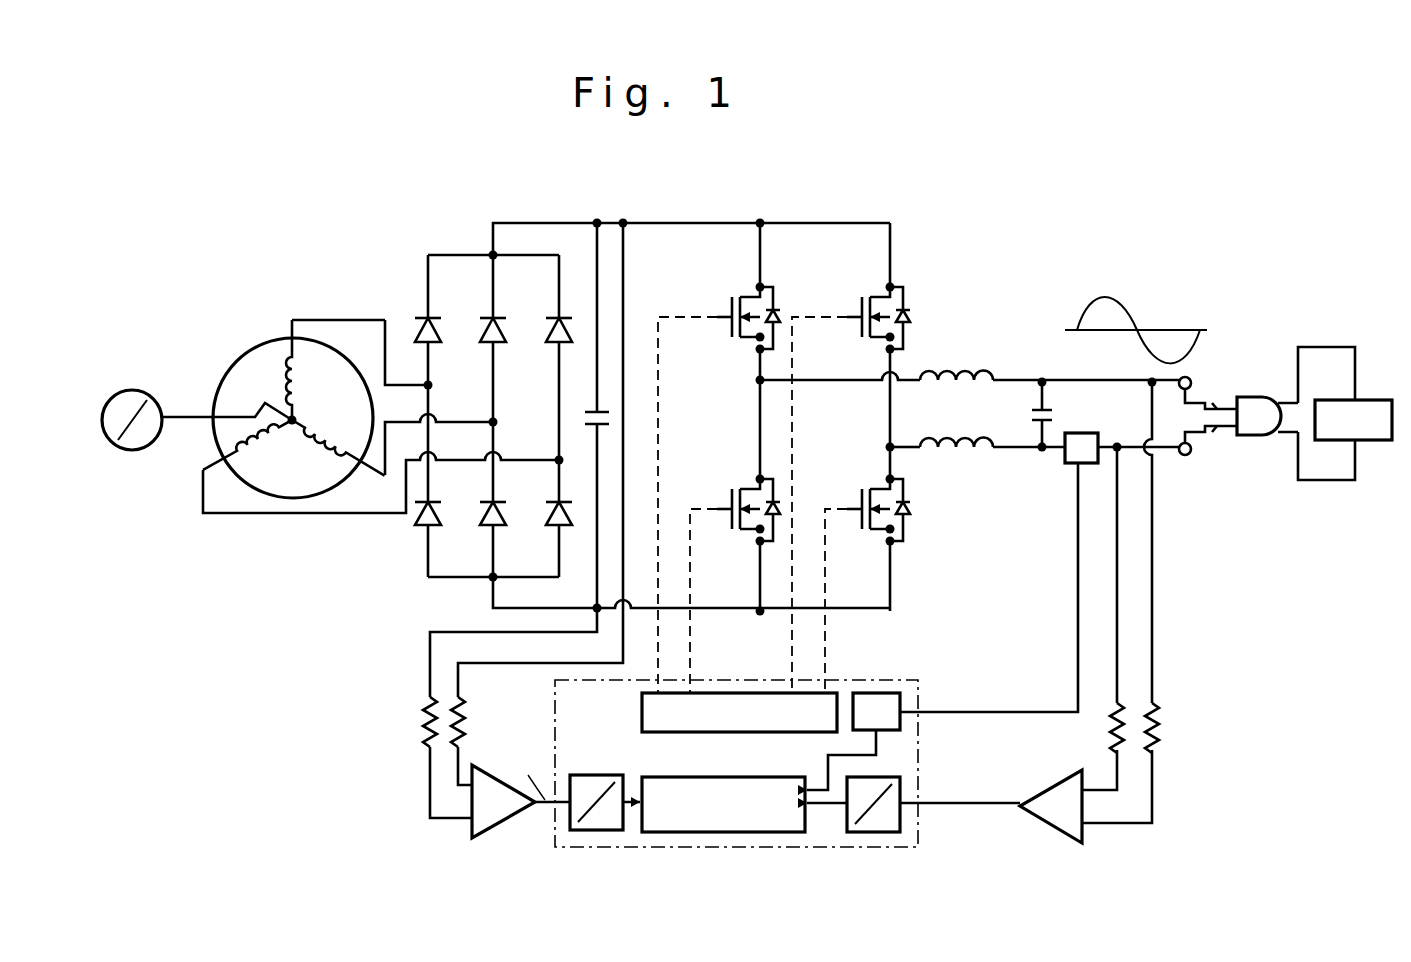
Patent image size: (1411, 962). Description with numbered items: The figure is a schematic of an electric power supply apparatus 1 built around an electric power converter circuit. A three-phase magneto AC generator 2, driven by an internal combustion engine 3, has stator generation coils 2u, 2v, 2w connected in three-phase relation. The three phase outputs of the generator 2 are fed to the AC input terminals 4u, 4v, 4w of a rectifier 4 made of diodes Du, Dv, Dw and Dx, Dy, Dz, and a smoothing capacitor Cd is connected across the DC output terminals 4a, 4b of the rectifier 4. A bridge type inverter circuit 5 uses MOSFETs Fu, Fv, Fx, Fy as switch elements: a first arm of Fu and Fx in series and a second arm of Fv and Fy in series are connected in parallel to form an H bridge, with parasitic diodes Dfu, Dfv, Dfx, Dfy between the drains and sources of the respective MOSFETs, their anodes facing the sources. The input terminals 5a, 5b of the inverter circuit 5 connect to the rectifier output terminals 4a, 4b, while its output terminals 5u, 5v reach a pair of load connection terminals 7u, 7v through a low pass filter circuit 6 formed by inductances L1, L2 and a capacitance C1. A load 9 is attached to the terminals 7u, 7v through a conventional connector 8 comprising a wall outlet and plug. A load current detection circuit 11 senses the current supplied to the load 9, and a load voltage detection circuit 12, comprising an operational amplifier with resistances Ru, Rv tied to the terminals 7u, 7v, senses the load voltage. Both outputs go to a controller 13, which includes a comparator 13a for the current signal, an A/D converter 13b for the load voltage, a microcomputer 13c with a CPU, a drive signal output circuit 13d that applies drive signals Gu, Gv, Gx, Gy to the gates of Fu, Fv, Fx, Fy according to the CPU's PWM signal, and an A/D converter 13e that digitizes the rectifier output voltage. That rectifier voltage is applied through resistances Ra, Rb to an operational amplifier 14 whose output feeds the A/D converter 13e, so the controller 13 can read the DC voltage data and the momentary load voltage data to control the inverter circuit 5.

The power supply apparatus 1 is at (918, 199).
The three-phase magneto AC generator 2 is at (291, 415).
The generation coil 2u is at (285, 355).
The generation coil 2v is at (330, 470).
The generation coil 2w is at (250, 483).
The internal combustion engine 3 is at (128, 388).
The rectifier 4 is at (471, 395).
The DC output terminal 4a is at (491, 254).
The DC output terminal 4b is at (491, 578).
The AC input terminal 4u is at (426, 386).
The AC input terminal 4v is at (491, 421).
The AC input terminal 4w is at (557, 459).
The bridge type inverter circuit 5 is at (812, 405).
The input terminal 5a is at (670, 222).
The input terminal 5b is at (695, 613).
The output terminal 5u is at (758, 380).
The output terminal 5v is at (888, 446).
The low pass filter circuit 6 is at (1009, 388).
The load connection terminal 7u is at (1193, 374).
The load connection terminal 7v is at (1191, 458).
The connector 8 is at (1254, 396).
The load 9 is at (1375, 442).
The load current detection circuit 11 is at (1064, 460).
The load voltage detection circuit 12 is at (1045, 823).
The controller 13 is at (770, 766).
The comparator 13a is at (878, 692).
The A/D converter 13b is at (902, 787).
The microcomputer 13c is at (720, 834).
The drive signal output circuit 13d is at (641, 716).
The A/D converter 13e is at (595, 833).
The operational amplifier 14 is at (500, 826).
The diode Du is at (426, 318).
The diode Dv is at (491, 318).
The diode Dw is at (557, 318).
The diode Dx is at (420, 522).
The diode Dy is at (485, 518).
The diode Dz is at (552, 518).
The smoothing capacitor Cd is at (595, 417).
The MOSFET Fu is at (718, 293).
The MOSFET Fv is at (847, 293).
The MOSFET Fx is at (723, 482).
The MOSFET Fy is at (852, 489).
The parasitic diode Dfu is at (777, 302).
The parasitic diode Dfv is at (908, 315).
The parasitic diode Dfx is at (778, 525).
The parasitic diode Dfy is at (909, 513).
The drive signal Gu is at (752, 295).
The drive signal Gv is at (870, 270).
The drive signal Gx is at (727, 457).
The drive signal Gy is at (884, 487).
The inductance L1 is at (960, 372).
The inductance L2 is at (962, 450).
The capacitance C1 is at (1053, 416).
The resistance Ra is at (466, 720).
The resistance Rb is at (424, 722).
The resistance Ru is at (1158, 720).
The resistance Rv is at (1125, 720).